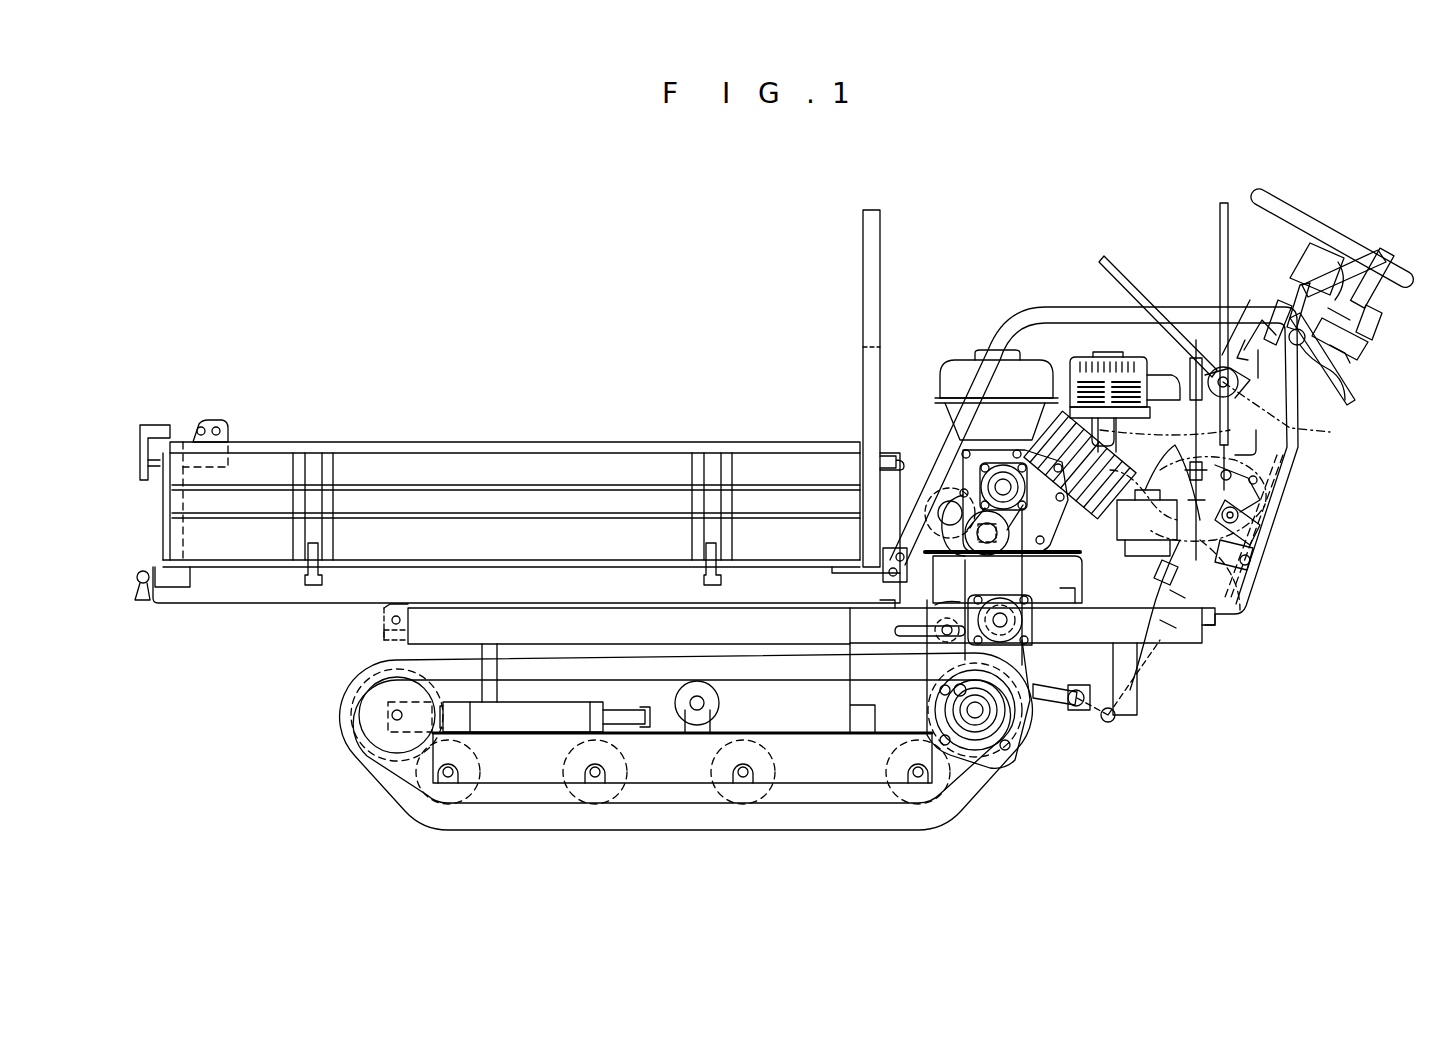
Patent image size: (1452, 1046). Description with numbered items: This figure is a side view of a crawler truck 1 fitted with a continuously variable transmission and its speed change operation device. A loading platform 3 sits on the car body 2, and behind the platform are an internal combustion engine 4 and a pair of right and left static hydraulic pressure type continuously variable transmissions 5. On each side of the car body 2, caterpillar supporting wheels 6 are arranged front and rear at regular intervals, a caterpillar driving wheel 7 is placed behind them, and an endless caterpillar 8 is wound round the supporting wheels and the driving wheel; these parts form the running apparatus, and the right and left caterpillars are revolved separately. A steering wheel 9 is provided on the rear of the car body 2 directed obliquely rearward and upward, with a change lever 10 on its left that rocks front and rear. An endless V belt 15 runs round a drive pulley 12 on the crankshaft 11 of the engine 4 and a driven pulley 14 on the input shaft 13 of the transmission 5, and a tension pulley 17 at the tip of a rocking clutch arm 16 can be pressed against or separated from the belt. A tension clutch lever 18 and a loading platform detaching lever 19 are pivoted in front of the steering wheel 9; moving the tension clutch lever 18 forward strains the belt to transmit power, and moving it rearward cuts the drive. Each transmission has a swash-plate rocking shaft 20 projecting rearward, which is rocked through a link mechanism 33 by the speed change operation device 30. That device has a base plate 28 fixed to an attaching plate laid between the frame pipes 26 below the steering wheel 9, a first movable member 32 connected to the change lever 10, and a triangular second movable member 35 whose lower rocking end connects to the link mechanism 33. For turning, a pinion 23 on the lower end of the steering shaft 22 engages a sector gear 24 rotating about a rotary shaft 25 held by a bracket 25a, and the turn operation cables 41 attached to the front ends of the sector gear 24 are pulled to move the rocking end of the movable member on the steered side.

The crawler truck 1 is at (440, 308).
The car body 2 is at (790, 600).
The loading platform 3 is at (430, 440).
The internal combustion engine 4 is at (1068, 385).
The static hydraulic pressure type continuously variable transmission 5 is at (1008, 700).
The caterpillar supporting wheel 6 is at (425, 793).
The caterpillar driving wheel 7 is at (975, 745).
The endless caterpillar 8 is at (682, 830).
The steering wheel 9 is at (1312, 210).
The change lever 10 is at (1382, 262).
The crankshaft 11 is at (965, 460).
The drive pulley 12 is at (1015, 492).
The input shaft 13 is at (930, 630).
The driven pulley 14 is at (1030, 586).
The endless V belt 15 is at (1130, 530).
The clutch arm 16 is at (926, 537).
The tension pulley 17 is at (924, 502).
The tension clutch lever 18 is at (1220, 208).
The loading platform detaching lever 19 is at (1120, 262).
The swash-plate rocking shaft 20 is at (1030, 623).
The steering shaft 22 is at (1295, 285).
The pinion 23 is at (1290, 318).
The sector gear 24 is at (1352, 400).
The rotary shaft 25 is at (1362, 340).
The bracket 25a is at (1345, 312).
The frame pipe 26 is at (1285, 480).
The base plate 28 is at (1268, 538).
The speed change operation device 30 is at (1260, 560).
The first movable member 32 is at (1287, 458).
The link mechanism 33 is at (1142, 688).
The second movable member 35 is at (1222, 608).
The turn operation cable 41 is at (1300, 420).